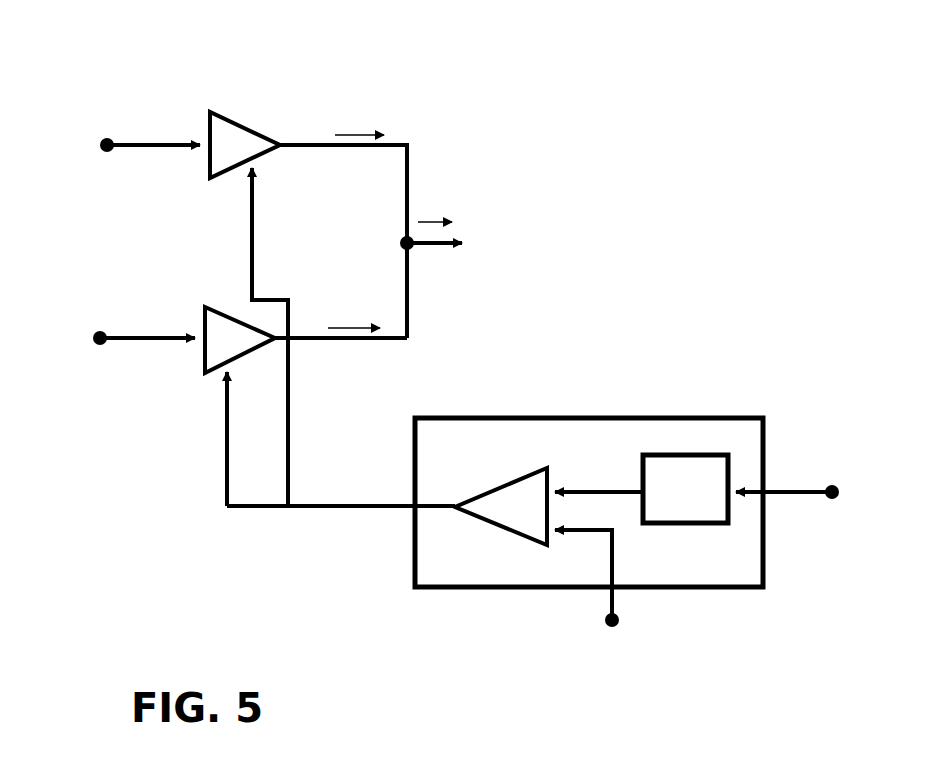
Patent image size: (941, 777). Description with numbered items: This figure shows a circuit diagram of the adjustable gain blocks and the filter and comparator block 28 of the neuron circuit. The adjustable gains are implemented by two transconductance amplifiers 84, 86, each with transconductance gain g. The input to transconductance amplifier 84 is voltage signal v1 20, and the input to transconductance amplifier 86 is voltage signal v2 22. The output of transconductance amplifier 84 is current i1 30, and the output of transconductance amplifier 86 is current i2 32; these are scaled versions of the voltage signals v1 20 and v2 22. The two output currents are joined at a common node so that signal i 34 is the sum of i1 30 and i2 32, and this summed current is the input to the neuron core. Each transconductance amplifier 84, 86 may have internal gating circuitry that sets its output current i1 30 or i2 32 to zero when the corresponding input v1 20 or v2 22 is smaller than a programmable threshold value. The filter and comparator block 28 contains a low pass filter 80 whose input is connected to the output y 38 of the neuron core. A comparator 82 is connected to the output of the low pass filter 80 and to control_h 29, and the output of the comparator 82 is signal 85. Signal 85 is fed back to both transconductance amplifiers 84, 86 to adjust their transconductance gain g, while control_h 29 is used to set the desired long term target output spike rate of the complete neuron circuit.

The voltage signal v1 20 is at (168, 147).
The voltage signal v2 22 is at (157, 342).
The filter and comparator block 28 is at (753, 417).
The control_h 29 is at (613, 603).
The current i1 30 is at (320, 143).
The current i2 32 is at (308, 337).
The signal i 34 is at (410, 217).
The signal y 38 is at (795, 487).
The low pass filter 80 is at (672, 514).
The comparator 82 is at (507, 509).
The transconductance amplifier 84 is at (225, 115).
The signal 85 is at (348, 507).
The transconductance amplifier 86 is at (237, 318).